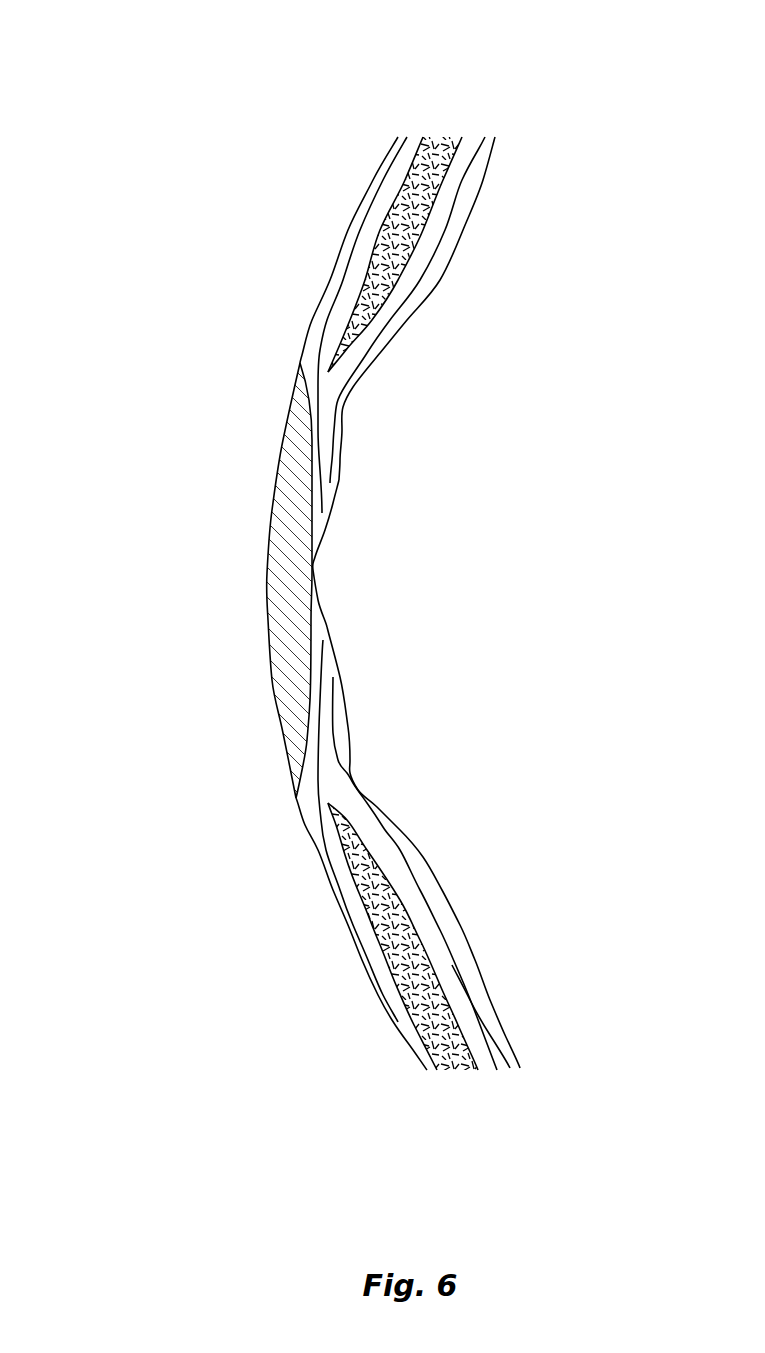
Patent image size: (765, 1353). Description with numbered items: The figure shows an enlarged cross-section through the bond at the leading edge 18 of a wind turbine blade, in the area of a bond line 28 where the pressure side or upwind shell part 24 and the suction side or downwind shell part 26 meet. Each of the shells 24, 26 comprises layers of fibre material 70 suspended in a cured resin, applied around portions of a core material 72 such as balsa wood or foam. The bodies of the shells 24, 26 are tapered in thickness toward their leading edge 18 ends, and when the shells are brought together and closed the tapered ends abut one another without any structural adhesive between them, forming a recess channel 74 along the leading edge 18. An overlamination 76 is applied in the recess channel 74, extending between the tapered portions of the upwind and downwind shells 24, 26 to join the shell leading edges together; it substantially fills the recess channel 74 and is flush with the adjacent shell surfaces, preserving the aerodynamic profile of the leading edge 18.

The leading edge 18 is at (308, 604).
The pressure side or upwind shell part 24 is at (358, 938).
The suction side or downwind shell part 26 is at (333, 257).
The bond line 28 is at (176, 580).
The fibre material 70 is at (485, 137).
The core material 72 is at (433, 137).
The recess channel 74 is at (328, 572).
The overlamination 76 is at (283, 637).